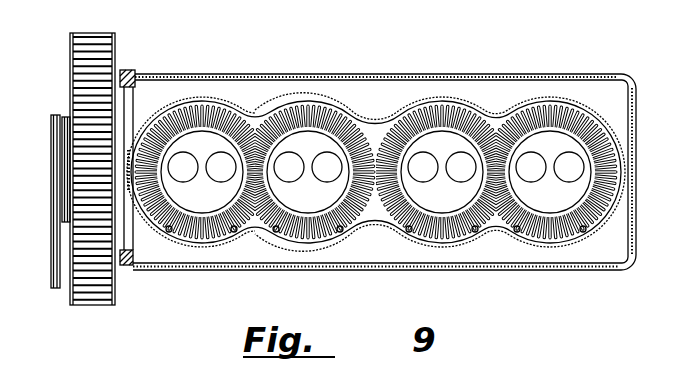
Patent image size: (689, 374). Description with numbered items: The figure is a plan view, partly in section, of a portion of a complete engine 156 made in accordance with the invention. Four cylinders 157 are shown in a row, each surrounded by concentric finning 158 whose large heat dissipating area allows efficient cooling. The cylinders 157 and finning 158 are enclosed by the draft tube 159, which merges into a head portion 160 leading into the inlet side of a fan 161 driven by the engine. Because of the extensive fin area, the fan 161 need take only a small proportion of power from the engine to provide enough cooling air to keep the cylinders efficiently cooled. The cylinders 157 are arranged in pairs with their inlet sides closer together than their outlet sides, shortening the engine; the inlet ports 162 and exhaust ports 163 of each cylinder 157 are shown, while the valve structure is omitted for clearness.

The engine 156 is at (496, 292).
The cylinders 157 is at (560, 147).
The finning 158 is at (536, 104).
The draft tube 159 is at (555, 256).
The head portion 160 is at (406, 268).
The fan 161 is at (118, 56).
The inlet ports 162 is at (461, 177).
The exhaust ports 163 is at (423, 176).